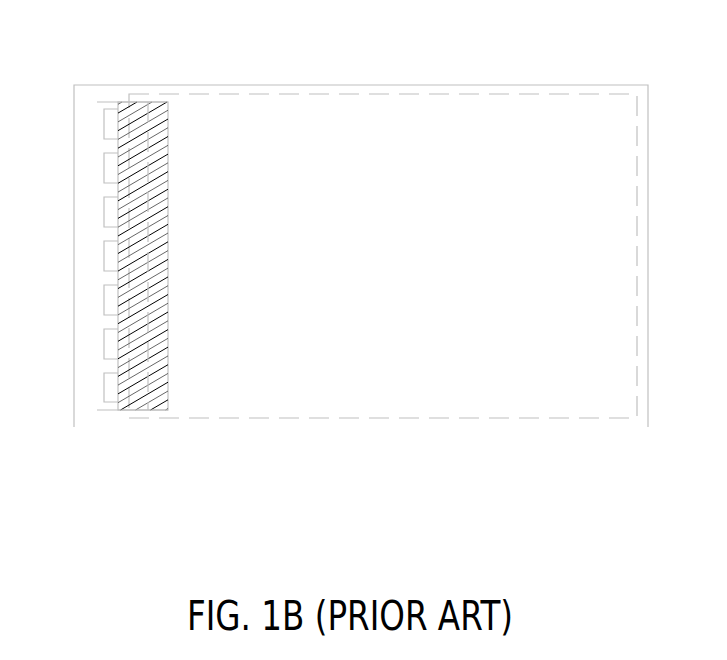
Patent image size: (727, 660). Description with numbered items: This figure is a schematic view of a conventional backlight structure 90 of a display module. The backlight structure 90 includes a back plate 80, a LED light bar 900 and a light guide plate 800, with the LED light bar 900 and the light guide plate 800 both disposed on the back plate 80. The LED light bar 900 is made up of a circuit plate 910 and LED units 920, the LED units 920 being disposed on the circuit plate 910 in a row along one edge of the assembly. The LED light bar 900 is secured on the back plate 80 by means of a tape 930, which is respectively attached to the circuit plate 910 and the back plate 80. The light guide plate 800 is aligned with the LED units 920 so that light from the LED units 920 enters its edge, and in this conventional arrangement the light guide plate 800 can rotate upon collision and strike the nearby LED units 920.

The backlight structure 90 is at (77, 43).
The back plate 80 is at (643, 107).
The light guide plate 800 is at (598, 408).
The LED light bar 900 is at (121, 316).
The circuit plate 910 is at (109, 407).
The LED units 920 is at (110, 343).
The tape 930 is at (118, 400).